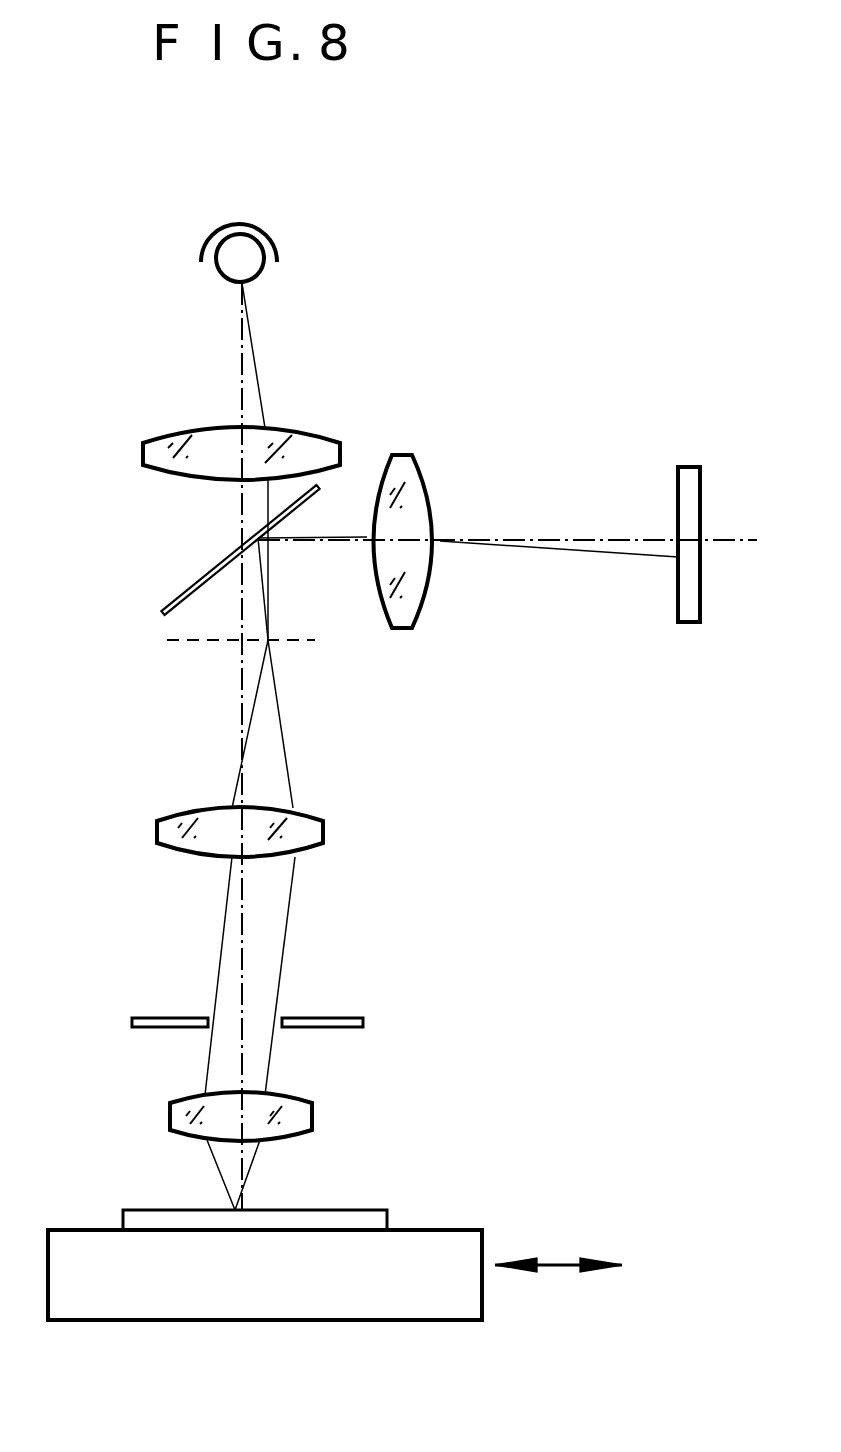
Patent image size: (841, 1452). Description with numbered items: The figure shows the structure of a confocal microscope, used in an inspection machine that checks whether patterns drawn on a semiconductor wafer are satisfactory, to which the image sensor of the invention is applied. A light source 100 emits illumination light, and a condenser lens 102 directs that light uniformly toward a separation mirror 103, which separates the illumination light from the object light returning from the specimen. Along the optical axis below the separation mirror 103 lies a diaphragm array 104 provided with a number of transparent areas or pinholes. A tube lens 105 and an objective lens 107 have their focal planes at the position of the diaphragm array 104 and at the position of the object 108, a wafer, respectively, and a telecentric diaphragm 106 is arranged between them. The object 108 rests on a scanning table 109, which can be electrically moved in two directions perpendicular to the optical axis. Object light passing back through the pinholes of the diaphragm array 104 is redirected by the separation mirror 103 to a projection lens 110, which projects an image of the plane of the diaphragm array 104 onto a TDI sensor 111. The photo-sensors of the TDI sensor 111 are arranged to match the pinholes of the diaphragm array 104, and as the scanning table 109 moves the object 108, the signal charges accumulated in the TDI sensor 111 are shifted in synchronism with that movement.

The light source 100 is at (262, 272).
The condenser lens 102 is at (310, 432).
The separation mirror 103 is at (188, 592).
The diaphragm array 104 is at (312, 640).
The tube lens 105 is at (323, 830).
The telecentric diaphragm 106 is at (330, 1018).
The objective lens 107 is at (312, 1112).
The object 108 is at (372, 1210).
The scanning table 109 is at (92, 1230).
The projection lens 110 is at (425, 480).
The TDI sensor 111 is at (687, 495).